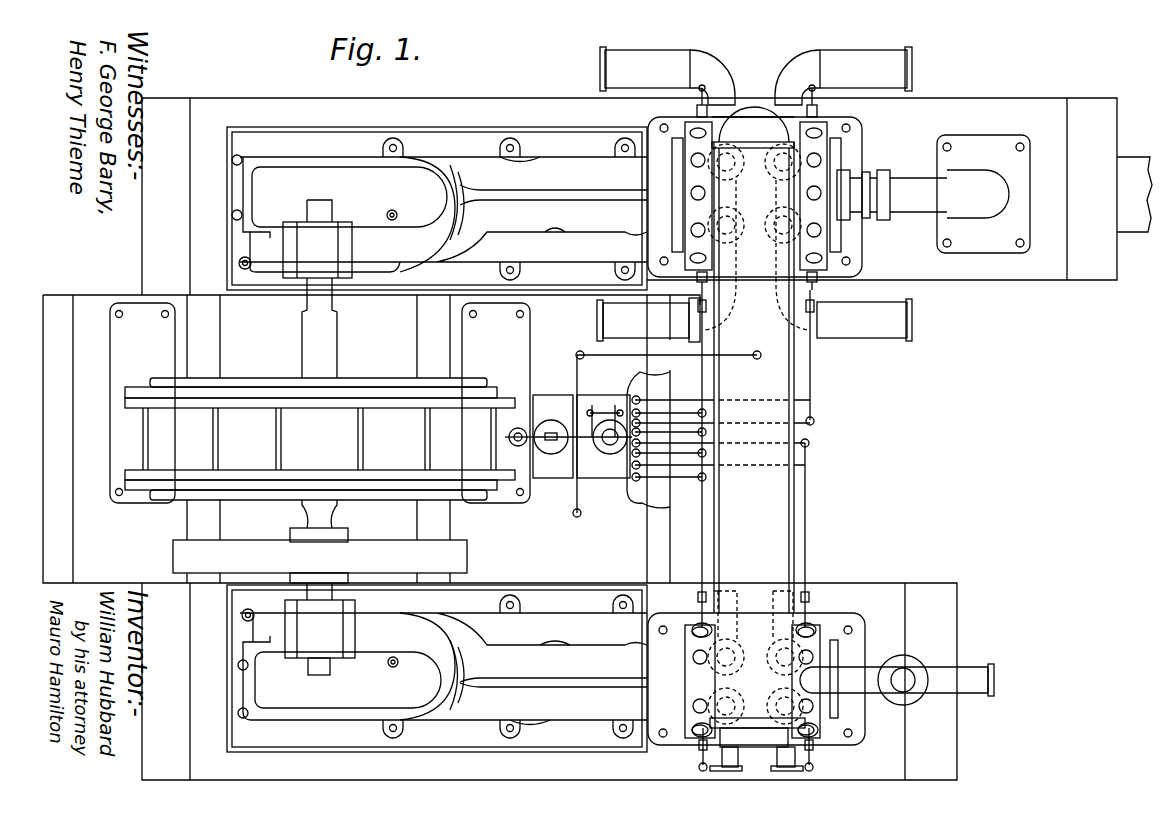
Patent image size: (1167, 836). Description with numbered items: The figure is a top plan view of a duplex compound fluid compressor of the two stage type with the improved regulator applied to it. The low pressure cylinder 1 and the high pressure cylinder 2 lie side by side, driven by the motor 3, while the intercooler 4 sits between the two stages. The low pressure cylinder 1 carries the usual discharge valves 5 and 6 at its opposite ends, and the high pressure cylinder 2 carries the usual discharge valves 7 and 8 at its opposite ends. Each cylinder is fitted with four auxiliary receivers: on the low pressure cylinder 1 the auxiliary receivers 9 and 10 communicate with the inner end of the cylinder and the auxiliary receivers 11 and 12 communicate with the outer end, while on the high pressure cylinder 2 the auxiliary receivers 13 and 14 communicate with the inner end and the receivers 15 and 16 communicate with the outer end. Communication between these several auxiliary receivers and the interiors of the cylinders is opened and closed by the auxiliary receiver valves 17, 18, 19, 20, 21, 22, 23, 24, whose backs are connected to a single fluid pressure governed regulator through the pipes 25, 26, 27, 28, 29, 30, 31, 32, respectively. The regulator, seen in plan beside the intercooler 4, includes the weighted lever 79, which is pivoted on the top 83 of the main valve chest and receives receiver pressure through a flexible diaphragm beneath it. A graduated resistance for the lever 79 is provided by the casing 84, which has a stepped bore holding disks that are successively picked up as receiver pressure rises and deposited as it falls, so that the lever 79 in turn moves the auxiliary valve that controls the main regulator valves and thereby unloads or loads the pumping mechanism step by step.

The low pressure cylinder 1 is at (809, 196).
The high pressure cylinder 2 is at (756, 669).
The motor 3 is at (329, 439).
The intercooler 4 is at (754, 377).
The discharge valve 5 is at (693, 196).
The discharge valve 6 is at (806, 234).
The discharge valve 7 is at (698, 658).
The discharge valve 8 is at (815, 658).
The auxiliary receiver 9 is at (667, 76).
The auxiliary receiver 10 is at (648, 320).
The auxiliary receiver 11 is at (843, 76).
The auxiliary receiver 12 is at (864, 320).
The auxiliary receiver 13 is at (716, 600).
The auxiliary receiver 14 is at (723, 760).
The auxiliary receiver 15 is at (807, 592).
The auxiliary receiver 16 is at (790, 760).
The auxiliary receiver valve 17 is at (698, 117).
The auxiliary receiver valve 18 is at (712, 275).
The auxiliary receiver valve 19 is at (797, 105).
The auxiliary receiver valve 20 is at (781, 283).
The auxiliary receiver valve 21 is at (700, 628).
The auxiliary receiver valve 22 is at (700, 727).
The auxiliary receiver valve 23 is at (812, 630).
The auxiliary receiver valve 24 is at (840, 745).
The pipe 25 is at (706, 95).
The pipe 26 is at (683, 440).
The pipe 27 is at (808, 95).
The pipe 28 is at (812, 292).
The pipe 29 is at (700, 592).
The pipe 30 is at (700, 745).
The pipe 31 is at (806, 606).
The pipe 32 is at (812, 755).
The lever 79 is at (582, 417).
The top of the main valve chest 83 is at (667, 434).
The casing 84 is at (541, 436).